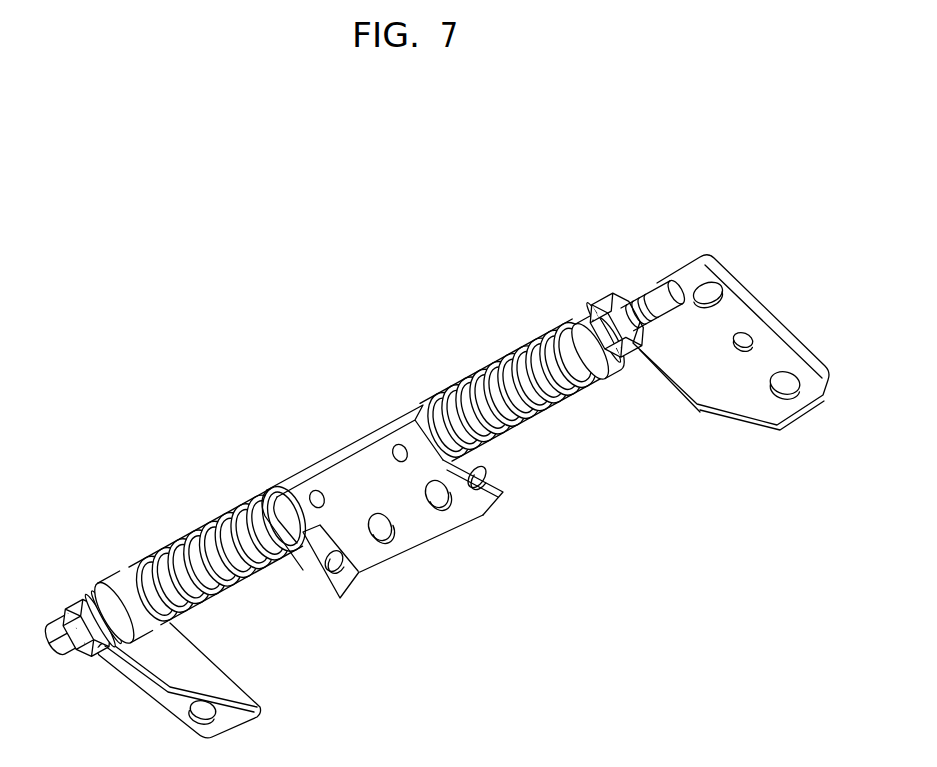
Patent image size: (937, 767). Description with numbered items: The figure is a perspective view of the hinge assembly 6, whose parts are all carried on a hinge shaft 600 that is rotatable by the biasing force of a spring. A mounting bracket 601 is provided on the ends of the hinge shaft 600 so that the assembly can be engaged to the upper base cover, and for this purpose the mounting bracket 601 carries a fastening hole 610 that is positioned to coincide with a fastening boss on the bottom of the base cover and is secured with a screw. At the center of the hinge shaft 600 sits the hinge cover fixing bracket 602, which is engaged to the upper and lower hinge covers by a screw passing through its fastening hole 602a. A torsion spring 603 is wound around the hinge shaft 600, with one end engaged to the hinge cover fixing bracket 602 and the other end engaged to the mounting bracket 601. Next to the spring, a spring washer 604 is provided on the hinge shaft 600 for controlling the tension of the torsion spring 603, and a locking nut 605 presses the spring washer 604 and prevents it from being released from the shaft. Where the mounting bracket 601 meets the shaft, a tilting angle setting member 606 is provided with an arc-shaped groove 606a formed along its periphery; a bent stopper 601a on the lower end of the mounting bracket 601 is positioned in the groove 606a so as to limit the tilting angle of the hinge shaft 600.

The hinge assembly 6 is at (294, 309).
The hinge shaft 600 is at (260, 517).
The mounting bracket 601 is at (763, 317).
The bent stopper 601a is at (613, 337).
The hinge cover fixing bracket 602 is at (362, 465).
The fastening hole 602a is at (440, 500).
The torsion spring 603 is at (163, 545).
The spring washer 604 is at (600, 297).
The locking nut 605 is at (657, 283).
The tilting angle setting member 606 is at (602, 297).
The arc-shaped groove 606a is at (578, 328).
The fastening hole 610 is at (787, 377).